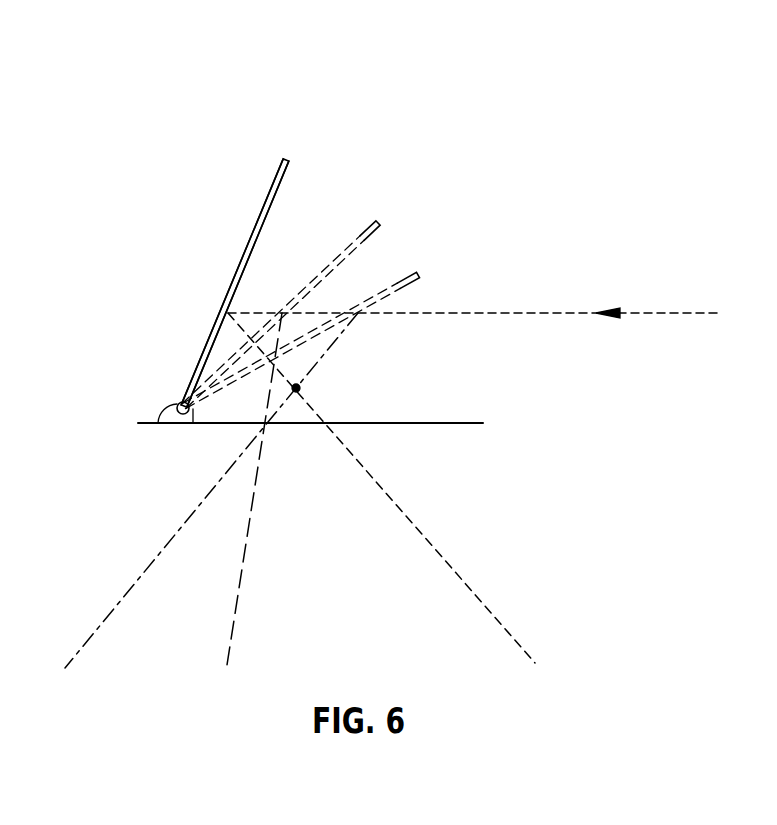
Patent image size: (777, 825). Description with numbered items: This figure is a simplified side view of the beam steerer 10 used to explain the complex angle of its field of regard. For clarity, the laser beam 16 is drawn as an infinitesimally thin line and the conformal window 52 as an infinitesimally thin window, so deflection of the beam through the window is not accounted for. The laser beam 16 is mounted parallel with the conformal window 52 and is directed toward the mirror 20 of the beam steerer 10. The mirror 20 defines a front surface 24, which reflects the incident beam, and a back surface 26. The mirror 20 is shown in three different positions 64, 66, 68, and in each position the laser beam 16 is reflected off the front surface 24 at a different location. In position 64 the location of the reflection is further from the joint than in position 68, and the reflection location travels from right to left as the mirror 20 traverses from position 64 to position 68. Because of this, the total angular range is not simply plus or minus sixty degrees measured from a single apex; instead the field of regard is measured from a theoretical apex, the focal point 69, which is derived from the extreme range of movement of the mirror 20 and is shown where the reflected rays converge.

The beam steerer 10 is at (145, 269).
The laser beam 16 is at (484, 312).
The mirror 20 is at (336, 242).
The front surface 24 is at (288, 177).
The back surface 26 is at (268, 190).
The conformal window 52 is at (462, 423).
The position 64 is at (433, 264).
The position 66 is at (392, 208).
The position 68 is at (295, 136).
The focal point 69 is at (299, 388).